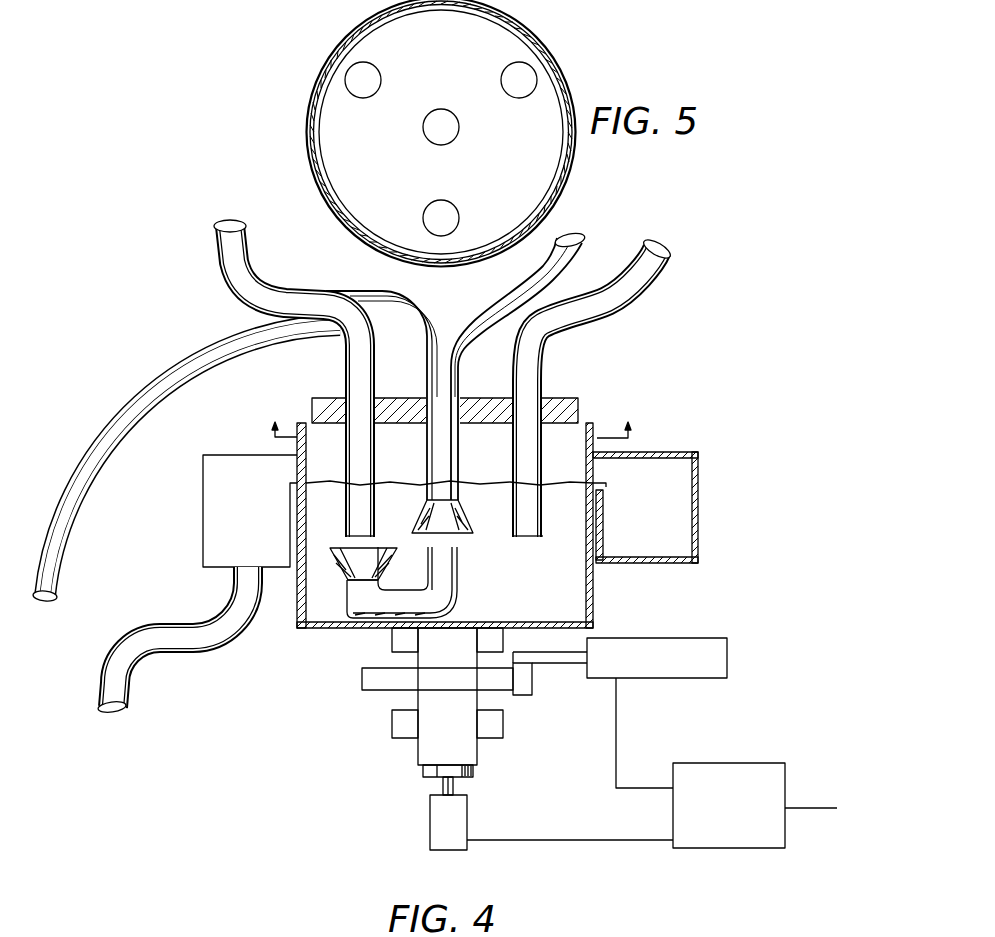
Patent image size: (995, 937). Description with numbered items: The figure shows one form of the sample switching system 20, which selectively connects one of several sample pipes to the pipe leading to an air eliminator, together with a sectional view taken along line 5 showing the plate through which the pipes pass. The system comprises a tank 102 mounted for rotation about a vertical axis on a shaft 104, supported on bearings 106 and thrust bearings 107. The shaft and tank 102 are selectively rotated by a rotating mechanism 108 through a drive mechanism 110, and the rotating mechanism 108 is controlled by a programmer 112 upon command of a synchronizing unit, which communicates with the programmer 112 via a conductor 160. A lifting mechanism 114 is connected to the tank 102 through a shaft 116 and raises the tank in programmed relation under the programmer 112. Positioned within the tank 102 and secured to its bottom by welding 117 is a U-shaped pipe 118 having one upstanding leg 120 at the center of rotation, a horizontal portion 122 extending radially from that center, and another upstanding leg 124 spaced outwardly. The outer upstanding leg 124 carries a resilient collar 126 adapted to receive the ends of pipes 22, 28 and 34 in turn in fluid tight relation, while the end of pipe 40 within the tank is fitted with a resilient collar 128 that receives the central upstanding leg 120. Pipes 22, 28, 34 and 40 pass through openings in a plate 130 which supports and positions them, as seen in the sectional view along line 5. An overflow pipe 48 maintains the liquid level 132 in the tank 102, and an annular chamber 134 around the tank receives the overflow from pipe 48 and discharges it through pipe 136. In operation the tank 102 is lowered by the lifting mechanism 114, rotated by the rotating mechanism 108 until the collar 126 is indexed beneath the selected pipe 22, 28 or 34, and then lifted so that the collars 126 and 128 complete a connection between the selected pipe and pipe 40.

In FIG. 4, the sample switching system 20 is at (264, 746).
In FIG. 5, the pipe 22 is at (373, 93).
In FIG. 4, the pipe 22 is at (214, 258).
In FIG. 5, the pipe 28 is at (459, 216).
In FIG. 4, the pipe 28 is at (580, 262).
In FIG. 5, the pipe 34 is at (522, 97).
In FIG. 4, the pipe 34 is at (660, 270).
In FIG. 5, the pipe 40 is at (443, 146).
In FIG. 4, the overflow pipe 48 is at (590, 484).
In FIG. 5, the tank 102 is at (310, 92).
In FIG. 4, the tank 102 is at (596, 600).
In FIG. 4, the shaft 104 is at (480, 699).
In FIG. 4, the bearings 106 is at (392, 641).
In FIG. 4, the thrust bearings 107 is at (478, 772).
In FIG. 4, the rotating mechanism 108 is at (708, 638).
In FIG. 4, the drive mechanism 110 is at (372, 682).
In FIG. 4, the programmer 112 is at (743, 763).
In FIG. 4, the lifting mechanism 114 is at (440, 834).
In FIG. 4, the shaft 116 is at (440, 786).
In FIG. 4, the welding 117 is at (460, 621).
In FIG. 4, the U-shaped pipe 118 is at (463, 600).
In FIG. 4, the upstanding leg 120 is at (452, 575).
In FIG. 4, the horizontal portion 122 is at (406, 586).
In FIG. 4, the upstanding leg 124 is at (360, 601).
In FIG. 4, the resilient collar 126 is at (337, 546).
In FIG. 4, the resilient collar 128 is at (461, 520).
In FIG. 5, the plate 130 is at (530, 52).
In FIG. 4, the plate 130 is at (578, 402).
In FIG. 4, the liquid level 132 is at (486, 480).
In FIG. 4, the annular chamber 134 is at (700, 522).
In FIG. 4, the pipe 136 is at (206, 655).
In FIG. 4, the conductor 160 is at (800, 806).
In FIG. 4, the line 5- 5 is at (453, 418).